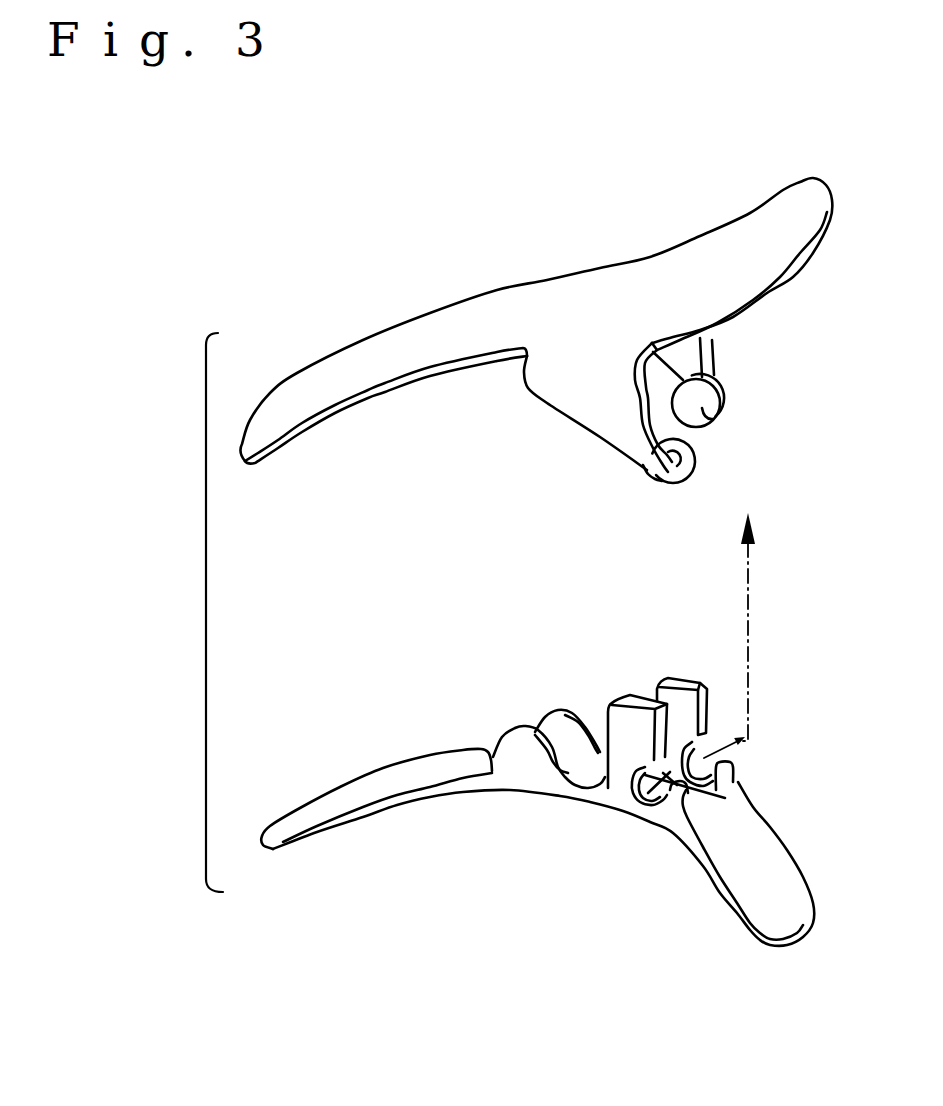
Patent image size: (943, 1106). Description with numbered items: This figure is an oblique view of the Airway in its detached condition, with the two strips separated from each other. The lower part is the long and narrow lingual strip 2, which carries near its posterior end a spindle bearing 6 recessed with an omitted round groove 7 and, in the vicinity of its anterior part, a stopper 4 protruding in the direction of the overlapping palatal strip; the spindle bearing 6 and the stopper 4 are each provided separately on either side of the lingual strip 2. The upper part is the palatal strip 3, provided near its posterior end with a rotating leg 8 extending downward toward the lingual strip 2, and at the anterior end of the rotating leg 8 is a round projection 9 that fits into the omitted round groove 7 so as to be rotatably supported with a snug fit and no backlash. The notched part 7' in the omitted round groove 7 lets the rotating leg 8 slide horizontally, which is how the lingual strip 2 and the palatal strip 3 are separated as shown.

The lingual strip 2 is at (338, 800).
The palatal strip 3 is at (423, 335).
The stopper 4 is at (513, 753).
The spindle bearing 6 is at (637, 743).
The omitted round groove 7 is at (646, 863).
The notched part 7' is at (695, 692).
The rotating leg 8 is at (593, 404).
The round projection 9 is at (714, 418).